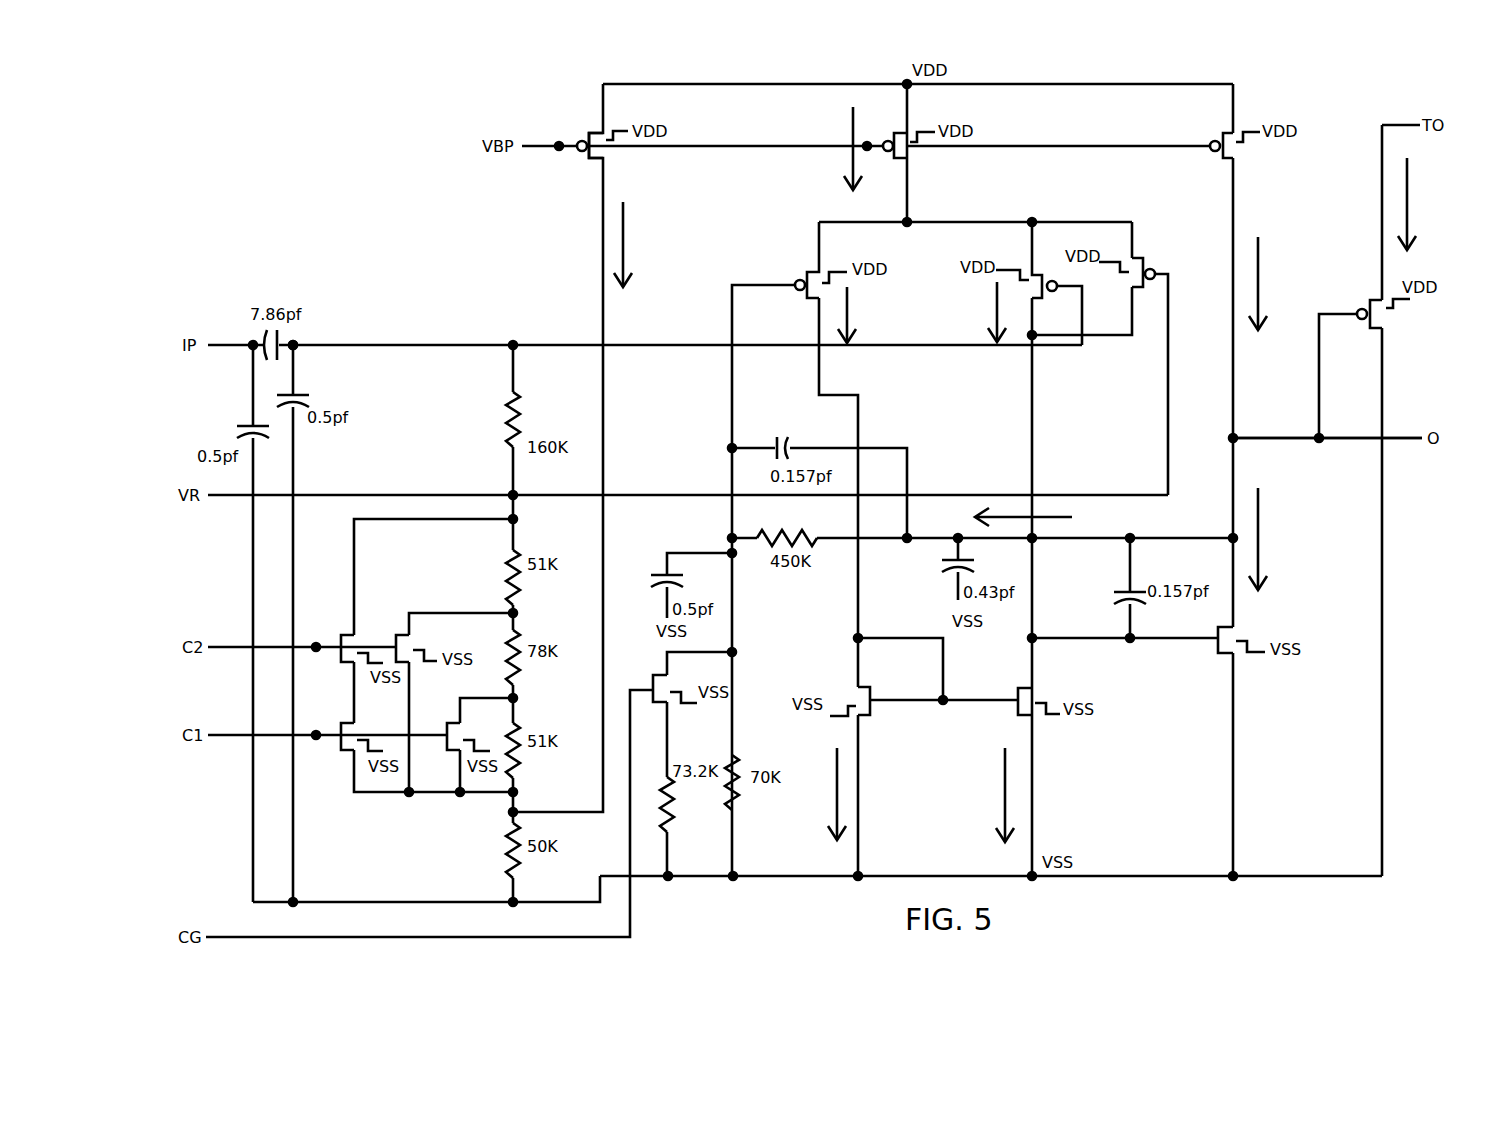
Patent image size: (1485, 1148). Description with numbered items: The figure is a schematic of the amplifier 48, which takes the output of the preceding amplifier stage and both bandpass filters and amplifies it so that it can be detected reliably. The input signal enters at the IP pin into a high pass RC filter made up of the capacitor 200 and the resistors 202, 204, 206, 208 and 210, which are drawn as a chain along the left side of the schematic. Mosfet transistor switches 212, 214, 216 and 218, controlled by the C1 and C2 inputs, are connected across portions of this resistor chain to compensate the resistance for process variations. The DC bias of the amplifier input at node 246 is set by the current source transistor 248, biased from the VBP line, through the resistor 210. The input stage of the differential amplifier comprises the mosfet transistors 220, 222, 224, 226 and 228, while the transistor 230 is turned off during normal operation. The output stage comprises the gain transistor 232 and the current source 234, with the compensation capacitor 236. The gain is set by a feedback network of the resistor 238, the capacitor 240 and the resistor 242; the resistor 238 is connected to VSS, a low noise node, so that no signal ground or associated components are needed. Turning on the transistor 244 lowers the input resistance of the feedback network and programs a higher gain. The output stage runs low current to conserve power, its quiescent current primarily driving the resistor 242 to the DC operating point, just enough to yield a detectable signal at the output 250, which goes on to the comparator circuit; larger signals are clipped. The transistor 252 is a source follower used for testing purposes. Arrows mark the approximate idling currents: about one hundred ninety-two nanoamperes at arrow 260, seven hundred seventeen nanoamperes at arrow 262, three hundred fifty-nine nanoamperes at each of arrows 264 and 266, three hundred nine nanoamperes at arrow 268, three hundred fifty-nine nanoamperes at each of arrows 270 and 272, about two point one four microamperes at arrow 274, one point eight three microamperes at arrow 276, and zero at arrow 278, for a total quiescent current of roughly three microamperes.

The amplifier 48 is at (509, 270).
The capacitor 200 is at (281, 333).
The resistor 202 is at (520, 418).
The resistor 204 is at (520, 555).
The resistor 206 is at (520, 640).
The resistor 208 is at (520, 728).
The resistor 210 is at (520, 873).
The mosfet transistor switch 212 is at (452, 752).
The mosfet transistor switch 214 is at (400, 641).
The mosfet transistor switch 216 is at (348, 752).
The mosfet transistor switch 218 is at (345, 636).
The mosfet transistor 220 is at (805, 276).
The mosfet transistor 222 is at (1040, 273).
The mosfet transistor 224 is at (862, 690).
The mosfet transistor 226 is at (1025, 693).
The mosfet transistor 228 is at (906, 156).
The transistor 230 is at (1140, 262).
The gain transistor 232 is at (1230, 632).
The current source 234 is at (1226, 156).
The compensation capacitor 236 is at (1138, 605).
The resistor 238 is at (735, 756).
The capacitor 240 is at (775, 440).
The resistor 242 is at (760, 545).
The transistor 244 is at (655, 682).
The node 246 is at (294, 350).
The current source transistor 248 is at (585, 158).
The output 250 is at (1400, 445).
The transistor 252 is at (1378, 320).
The arrow 260 is at (624, 238).
The arrow 262 is at (853, 118).
The arrow 264 is at (848, 300).
The arrow 266 is at (997, 318).
The arrow 268 is at (1008, 516).
The arrow 270 is at (837, 793).
The arrow 272 is at (1005, 812).
The arrow 274 is at (1258, 283).
The arrow 276 is at (1258, 540).
The arrow 278 is at (1407, 222).